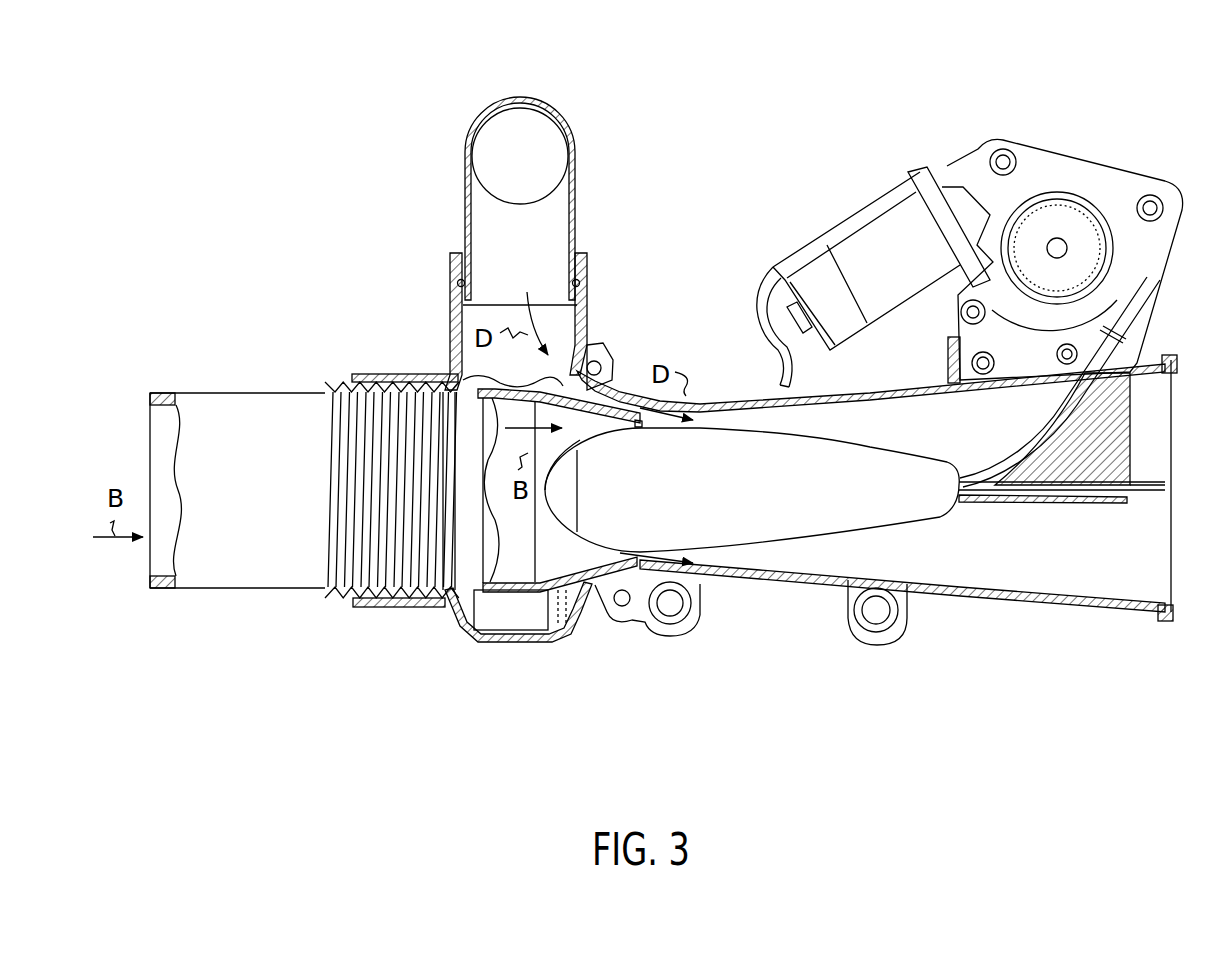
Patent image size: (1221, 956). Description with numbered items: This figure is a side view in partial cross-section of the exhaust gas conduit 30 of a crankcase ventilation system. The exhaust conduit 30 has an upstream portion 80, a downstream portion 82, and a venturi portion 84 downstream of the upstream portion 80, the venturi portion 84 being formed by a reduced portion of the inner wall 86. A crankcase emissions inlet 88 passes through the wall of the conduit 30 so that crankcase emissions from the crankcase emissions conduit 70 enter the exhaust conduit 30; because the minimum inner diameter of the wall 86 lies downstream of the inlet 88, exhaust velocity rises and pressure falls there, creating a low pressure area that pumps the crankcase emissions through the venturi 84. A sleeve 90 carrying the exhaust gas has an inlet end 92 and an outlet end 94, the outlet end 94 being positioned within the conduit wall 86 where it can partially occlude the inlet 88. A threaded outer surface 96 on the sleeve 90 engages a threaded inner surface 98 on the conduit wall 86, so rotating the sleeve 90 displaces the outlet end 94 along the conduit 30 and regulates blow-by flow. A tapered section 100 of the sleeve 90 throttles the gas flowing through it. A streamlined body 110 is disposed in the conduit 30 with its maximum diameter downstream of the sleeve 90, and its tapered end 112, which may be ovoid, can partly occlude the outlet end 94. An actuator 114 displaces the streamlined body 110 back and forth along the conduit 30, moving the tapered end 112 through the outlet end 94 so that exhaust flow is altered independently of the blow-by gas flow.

The exhaust gas conduit 30 is at (1049, 569).
The crankcase emissions conduit 70 is at (573, 188).
The upstream portion 80 is at (395, 608).
The downstream portion 82 is at (1167, 621).
The venturi portion 84 is at (710, 557).
The inner wall 86 is at (897, 400).
The crankcase emissions inlet 88 is at (587, 365).
The sleeve 90 is at (308, 593).
The inlet end 92 is at (150, 427).
The outlet end 94 is at (645, 428).
The threaded outer surface 96 is at (348, 415).
The threaded inner surface 98 is at (412, 383).
The tapered section 100 is at (583, 603).
The streamlined body 110 is at (768, 505).
The tapered end 112 is at (540, 513).
The actuator 114 is at (1172, 150).